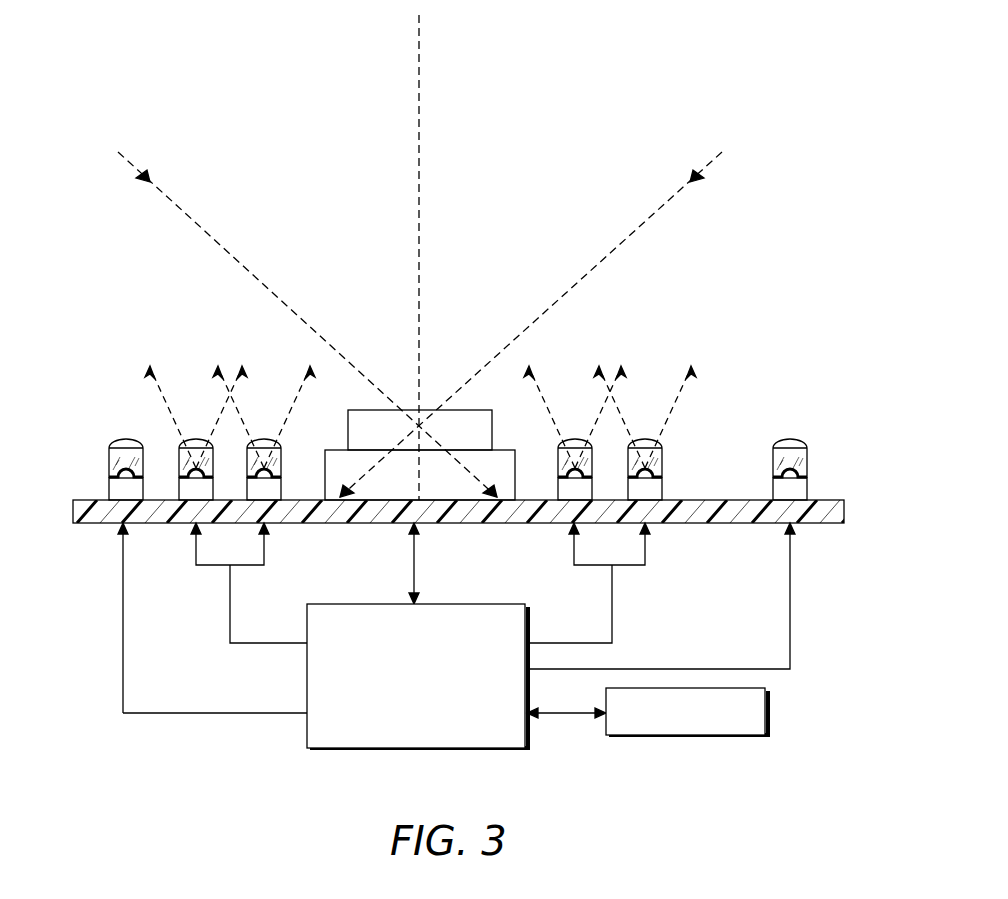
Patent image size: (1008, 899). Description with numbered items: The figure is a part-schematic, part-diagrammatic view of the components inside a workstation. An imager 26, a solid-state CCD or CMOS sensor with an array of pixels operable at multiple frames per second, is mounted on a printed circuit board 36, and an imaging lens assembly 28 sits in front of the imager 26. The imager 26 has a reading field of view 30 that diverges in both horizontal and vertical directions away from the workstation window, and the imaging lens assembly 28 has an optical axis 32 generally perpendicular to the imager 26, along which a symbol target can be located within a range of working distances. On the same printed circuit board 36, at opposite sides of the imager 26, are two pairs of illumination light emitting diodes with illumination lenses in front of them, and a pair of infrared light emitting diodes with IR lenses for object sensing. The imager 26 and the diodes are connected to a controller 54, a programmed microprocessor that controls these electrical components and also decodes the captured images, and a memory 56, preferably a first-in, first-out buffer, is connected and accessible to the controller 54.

The imager 26 is at (338, 458).
The imaging lens assembly 28 is at (485, 428).
The reading field of view 30 is at (670, 200).
The optical axis 32 is at (419, 46).
The printed circuit board 36 is at (845, 510).
The controller 54 is at (307, 675).
The memory 56 is at (767, 716).